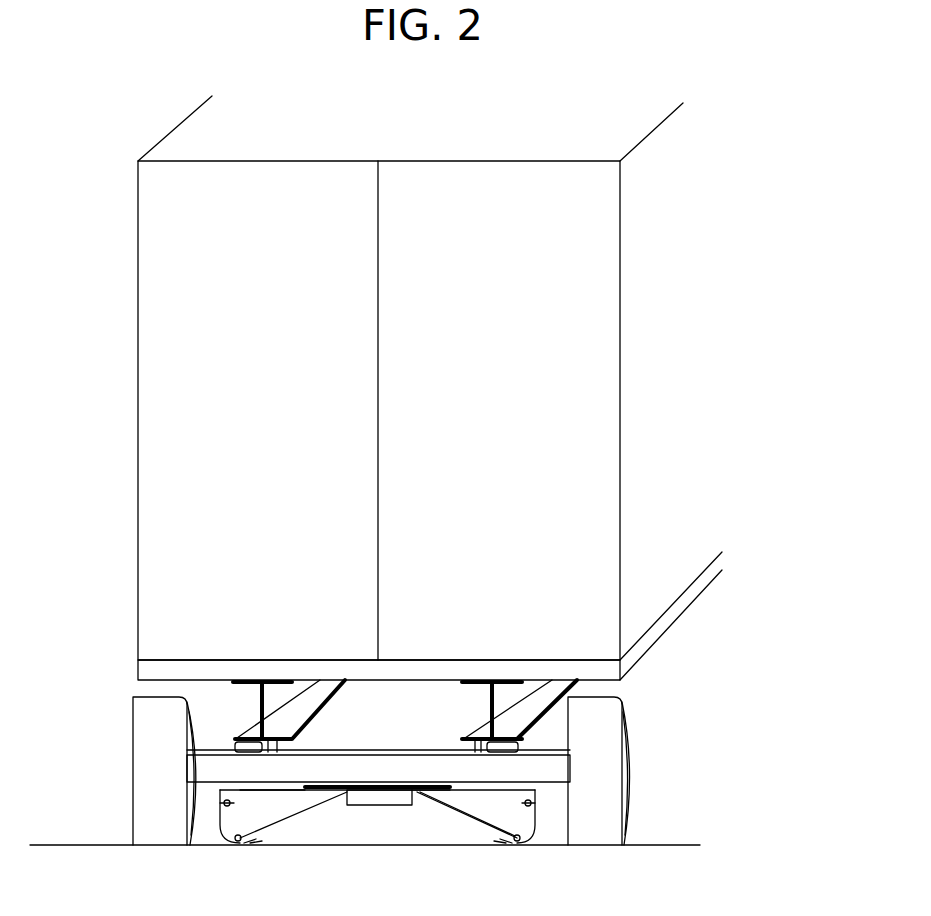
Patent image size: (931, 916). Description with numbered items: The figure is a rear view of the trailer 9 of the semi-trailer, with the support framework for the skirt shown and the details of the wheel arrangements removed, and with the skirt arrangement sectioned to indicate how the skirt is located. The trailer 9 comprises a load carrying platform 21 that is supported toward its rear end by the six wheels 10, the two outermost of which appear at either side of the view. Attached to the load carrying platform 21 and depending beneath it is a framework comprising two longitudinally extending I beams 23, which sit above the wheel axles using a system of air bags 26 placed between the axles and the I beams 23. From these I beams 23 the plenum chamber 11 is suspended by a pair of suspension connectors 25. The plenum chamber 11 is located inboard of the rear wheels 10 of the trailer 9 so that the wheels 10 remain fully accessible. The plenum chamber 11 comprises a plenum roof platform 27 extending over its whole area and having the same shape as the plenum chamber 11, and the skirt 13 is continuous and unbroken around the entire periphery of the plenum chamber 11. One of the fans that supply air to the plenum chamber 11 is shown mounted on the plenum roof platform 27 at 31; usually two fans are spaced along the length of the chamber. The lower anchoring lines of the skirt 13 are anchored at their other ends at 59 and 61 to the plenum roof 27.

The trailer 9 is at (516, 291).
The load carrying platform 21 is at (182, 657).
The suspension connectors 25 is at (295, 746).
The I beams 23 is at (545, 723).
The air bags 26 is at (230, 748).
The anchoring point 59 is at (323, 786).
The anchoring point 61 is at (422, 788).
The fan 31 is at (365, 807).
The skirt 13 is at (218, 826).
The plenum roof platform 27 is at (284, 790).
The plenum chamber 11 is at (433, 819).
The wheels 10 is at (626, 777).